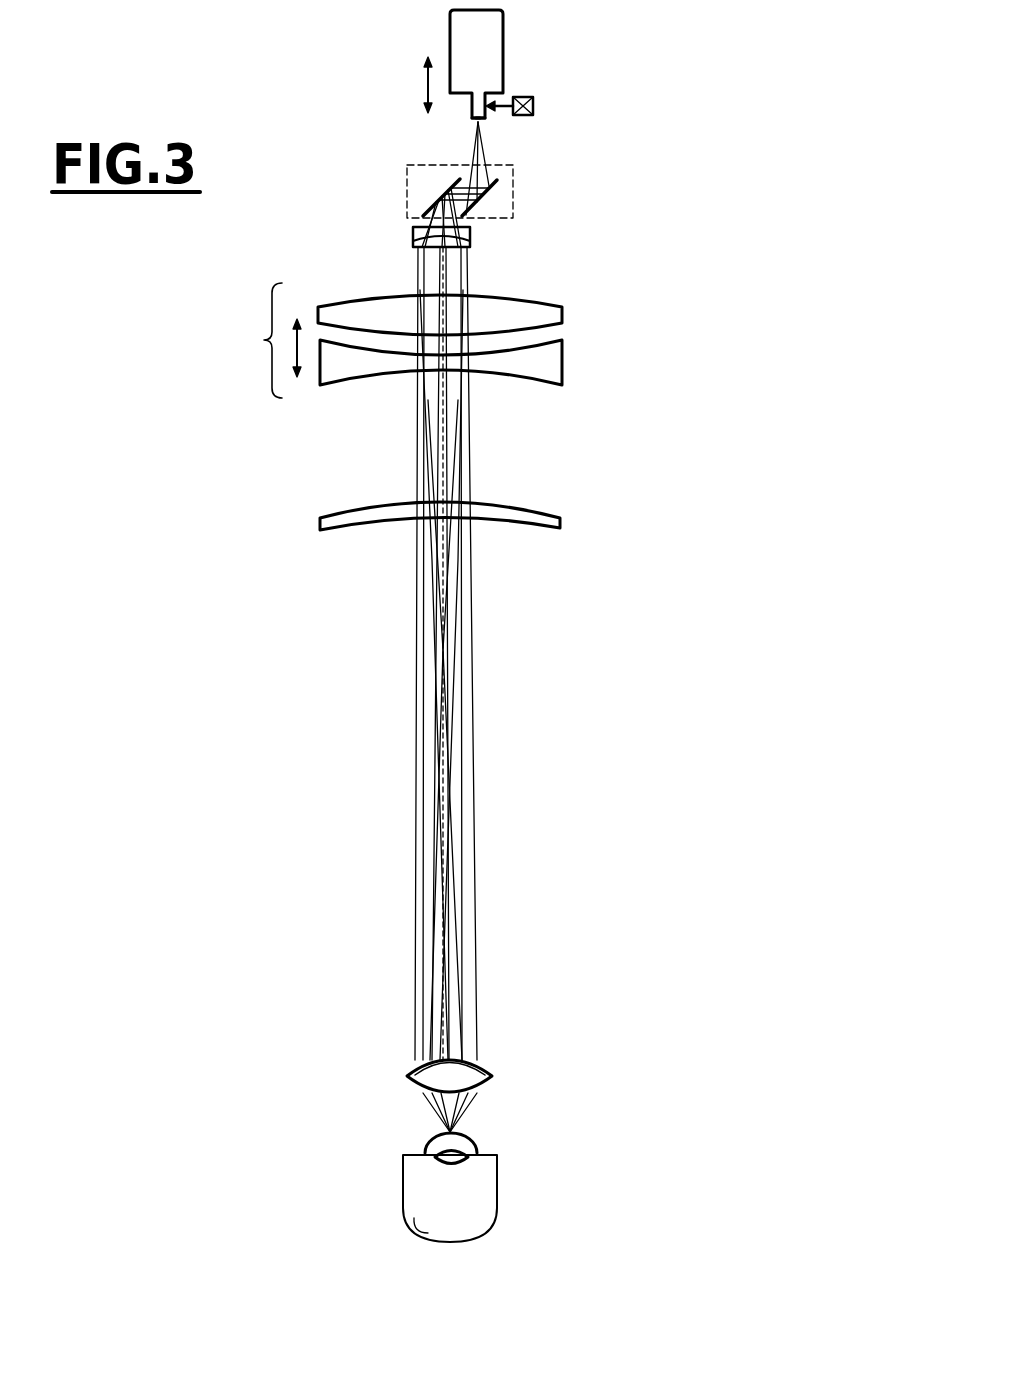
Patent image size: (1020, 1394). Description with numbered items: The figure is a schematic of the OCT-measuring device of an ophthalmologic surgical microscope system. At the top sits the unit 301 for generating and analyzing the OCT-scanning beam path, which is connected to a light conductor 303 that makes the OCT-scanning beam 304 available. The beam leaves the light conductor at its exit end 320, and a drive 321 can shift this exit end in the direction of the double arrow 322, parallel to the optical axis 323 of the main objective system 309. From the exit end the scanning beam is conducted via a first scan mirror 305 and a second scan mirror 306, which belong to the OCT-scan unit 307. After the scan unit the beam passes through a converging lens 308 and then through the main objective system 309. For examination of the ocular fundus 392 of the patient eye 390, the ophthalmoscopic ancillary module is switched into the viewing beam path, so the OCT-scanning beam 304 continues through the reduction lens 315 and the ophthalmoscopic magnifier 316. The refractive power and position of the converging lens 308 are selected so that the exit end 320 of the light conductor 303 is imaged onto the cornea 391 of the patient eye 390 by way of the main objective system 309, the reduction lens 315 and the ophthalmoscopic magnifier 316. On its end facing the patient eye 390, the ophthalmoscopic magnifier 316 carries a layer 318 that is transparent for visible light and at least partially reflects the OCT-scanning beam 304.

The unit for generating and analyzing an OCT-scanning beam path 301 is at (493, 28).
The light conductor 303 is at (484, 118).
The OCT-scanning beam 304 is at (473, 152).
The first scan mirror 305 is at (513, 205).
The second scan mirror 306 is at (442, 202).
The OCT-scan unit 307 is at (513, 187).
The converging lens 308 is at (413, 241).
The main objective system 309 is at (262, 340).
The reduction lens 315 is at (560, 523).
The ophthalmoscopic magnifier 316 is at (407, 1078).
The layer 318 is at (490, 1075).
The exit end of the light conductor 320 is at (477, 121).
The drive 321 is at (535, 105).
The double arrow 322 is at (420, 85).
The optical axis 323 is at (443, 392).
The patient eye 390 is at (487, 1203).
The cornea 391 is at (480, 1138).
The ocular fundus 392 is at (418, 1222).